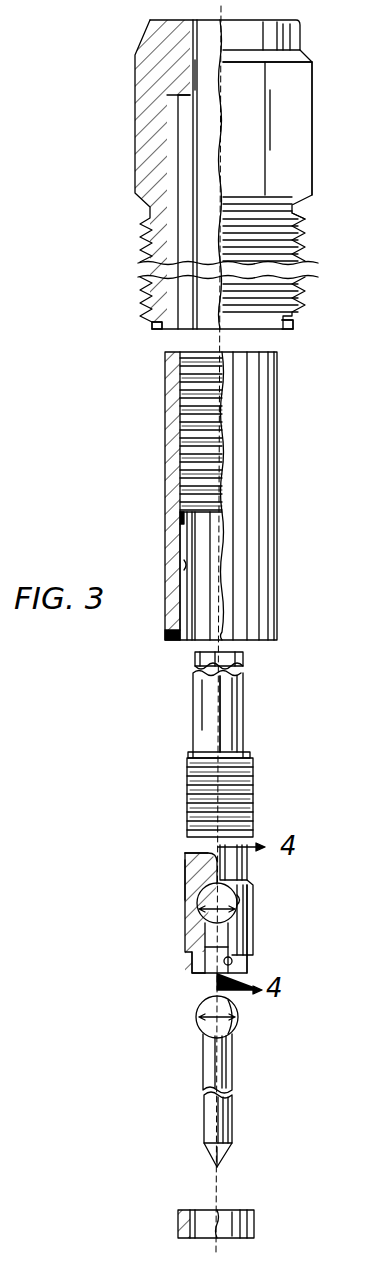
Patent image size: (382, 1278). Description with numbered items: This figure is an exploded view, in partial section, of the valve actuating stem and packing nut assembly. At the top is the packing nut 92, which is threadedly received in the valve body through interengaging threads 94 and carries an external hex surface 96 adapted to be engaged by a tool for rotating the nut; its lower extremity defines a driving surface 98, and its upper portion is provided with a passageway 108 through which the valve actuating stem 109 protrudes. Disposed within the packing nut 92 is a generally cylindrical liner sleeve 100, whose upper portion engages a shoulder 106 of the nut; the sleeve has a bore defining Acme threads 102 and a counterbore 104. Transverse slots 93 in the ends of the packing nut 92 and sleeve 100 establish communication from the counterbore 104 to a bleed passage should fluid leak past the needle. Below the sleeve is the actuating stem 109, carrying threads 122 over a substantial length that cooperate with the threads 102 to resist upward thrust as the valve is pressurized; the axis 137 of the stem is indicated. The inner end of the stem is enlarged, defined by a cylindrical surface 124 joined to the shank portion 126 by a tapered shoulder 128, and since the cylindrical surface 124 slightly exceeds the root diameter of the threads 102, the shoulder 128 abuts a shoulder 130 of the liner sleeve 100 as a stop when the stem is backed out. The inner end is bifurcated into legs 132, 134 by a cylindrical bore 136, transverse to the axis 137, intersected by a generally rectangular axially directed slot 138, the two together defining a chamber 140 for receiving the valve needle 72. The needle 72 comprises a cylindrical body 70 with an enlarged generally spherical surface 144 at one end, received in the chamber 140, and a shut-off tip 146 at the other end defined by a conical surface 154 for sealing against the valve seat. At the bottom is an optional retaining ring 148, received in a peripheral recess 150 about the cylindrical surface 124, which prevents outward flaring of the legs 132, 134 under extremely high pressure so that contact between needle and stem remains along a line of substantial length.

The packing nut 92 is at (146, 100).
The transverse slots 93 is at (152, 326).
The interengaging threads 94 is at (305, 240).
The external hex surface 96 is at (256, 162).
The driving surface 98 is at (293, 328).
The liner sleeve 100 is at (172, 402).
The Acme threads 102 is at (190, 428).
The counterbore 104 is at (184, 565).
The shoulder 106 is at (186, 97).
The passageway 108 is at (197, 75).
The valve actuating stem 109 is at (210, 700).
The threads 122 is at (188, 783).
The cylindrical surface 124 is at (185, 925).
The shank portion 126 is at (192, 857).
The tapered shoulder 128 is at (184, 882).
The shoulder 130 is at (180, 522).
The leg 132 is at (192, 946).
The leg 134 is at (240, 930).
The cylindrical bore 136 is at (239, 900).
The axis 137 is at (232, 700).
The slot 138 is at (233, 961).
The chamber 140 is at (198, 902).
The spherical surface 144 is at (200, 1022).
The tip 146 is at (207, 1155).
The retaining ring 148 is at (180, 1226).
The peripheral recess 150 is at (192, 963).
The conical surface 154 is at (222, 1152).
The cylindrical body 70 is at (205, 1105).
The valve needle 72 is at (247, 1058).